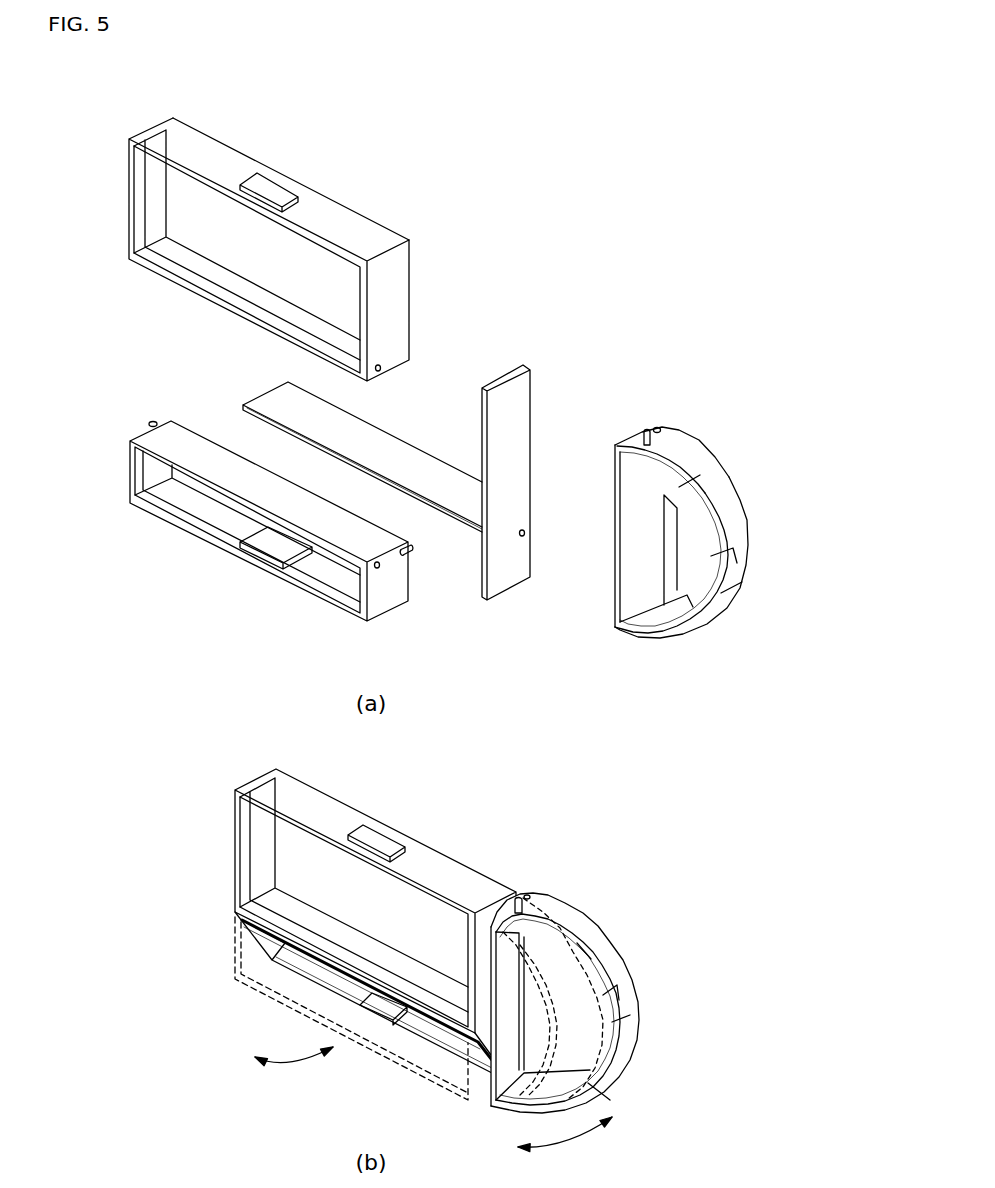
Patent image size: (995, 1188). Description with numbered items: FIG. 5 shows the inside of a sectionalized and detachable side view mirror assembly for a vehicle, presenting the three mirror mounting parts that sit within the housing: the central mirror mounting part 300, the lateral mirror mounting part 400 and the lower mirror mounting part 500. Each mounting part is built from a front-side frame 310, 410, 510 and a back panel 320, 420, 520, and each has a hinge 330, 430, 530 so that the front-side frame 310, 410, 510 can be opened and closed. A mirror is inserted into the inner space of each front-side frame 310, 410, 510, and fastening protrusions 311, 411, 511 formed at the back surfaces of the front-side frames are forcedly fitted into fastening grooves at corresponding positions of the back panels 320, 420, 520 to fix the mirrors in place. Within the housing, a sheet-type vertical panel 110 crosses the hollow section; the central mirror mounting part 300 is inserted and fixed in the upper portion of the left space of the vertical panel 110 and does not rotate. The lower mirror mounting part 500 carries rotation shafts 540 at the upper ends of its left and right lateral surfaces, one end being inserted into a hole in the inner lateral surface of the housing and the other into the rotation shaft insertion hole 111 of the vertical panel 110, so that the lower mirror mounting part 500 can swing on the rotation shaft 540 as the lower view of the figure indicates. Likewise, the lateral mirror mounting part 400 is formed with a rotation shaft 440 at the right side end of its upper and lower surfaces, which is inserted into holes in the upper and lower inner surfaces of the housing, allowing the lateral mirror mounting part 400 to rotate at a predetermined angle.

The vertical panel 110 is at (528, 483).
The rotation shaft insertion hole 111 is at (525, 534).
The central mirror mounting part 300 is at (384, 835).
The front-side frame 310 is at (247, 243).
The fastening protrusion 311 is at (277, 193).
The back panel 320 is at (205, 158).
The hinge 330 is at (380, 371).
The lateral mirror mounting part 400 is at (546, 1033).
The front-side frame 410 is at (719, 498).
The fastening protrusion 411 is at (723, 577).
The back panel 420 is at (683, 468).
The hinge 430 is at (661, 429).
The rotation shaft 440 is at (645, 428).
The lower mirror mounting part 500 is at (244, 943).
The front-side frame 510 is at (272, 536).
The fastening protrusion 511 is at (272, 545).
The back panel 520 is at (207, 488).
The hinge 530 is at (378, 568).
The rotation shaft 540 is at (150, 423).